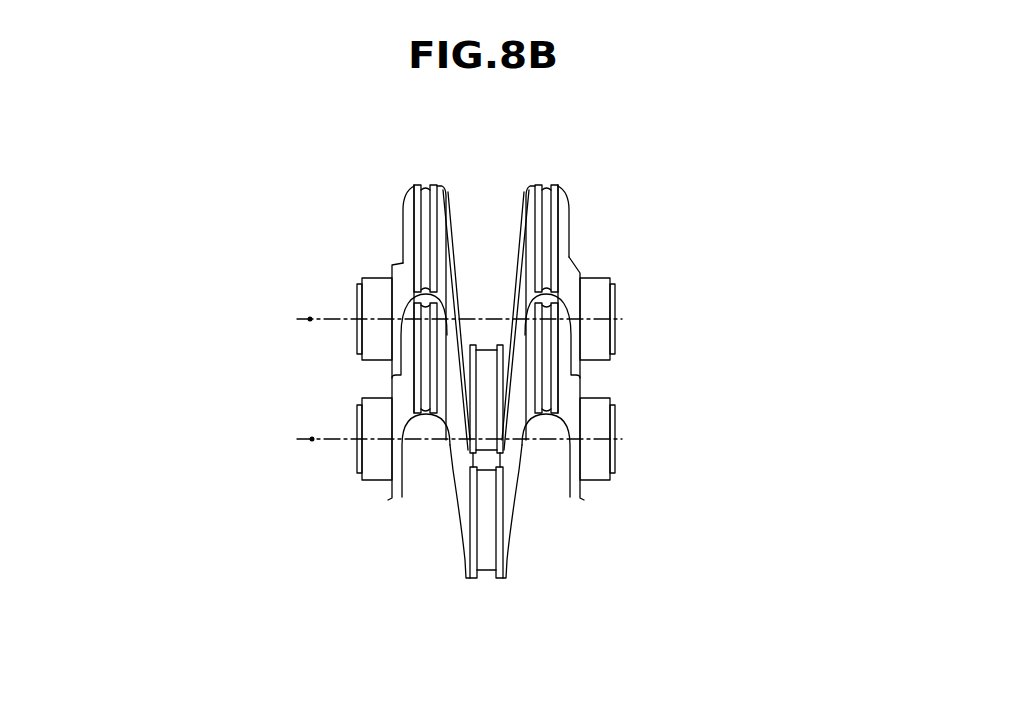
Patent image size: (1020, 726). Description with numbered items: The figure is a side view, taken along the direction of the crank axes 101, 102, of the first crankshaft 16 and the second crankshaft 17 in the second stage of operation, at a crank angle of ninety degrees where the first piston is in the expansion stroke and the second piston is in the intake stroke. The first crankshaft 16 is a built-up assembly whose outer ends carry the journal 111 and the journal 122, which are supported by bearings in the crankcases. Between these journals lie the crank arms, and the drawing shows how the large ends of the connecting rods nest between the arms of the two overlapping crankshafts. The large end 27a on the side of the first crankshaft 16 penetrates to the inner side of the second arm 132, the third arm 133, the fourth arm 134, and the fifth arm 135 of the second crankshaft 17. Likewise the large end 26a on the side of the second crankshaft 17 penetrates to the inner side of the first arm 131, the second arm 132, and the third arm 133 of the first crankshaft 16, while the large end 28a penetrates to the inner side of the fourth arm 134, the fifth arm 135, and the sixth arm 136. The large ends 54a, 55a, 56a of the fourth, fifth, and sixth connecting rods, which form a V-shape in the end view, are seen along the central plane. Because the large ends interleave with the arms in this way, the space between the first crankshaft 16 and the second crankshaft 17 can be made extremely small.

The first crankshaft 16 is at (402, 230).
The second crankshaft 17 is at (462, 547).
The large end 26a is at (455, 427).
The large end 27a is at (487, 350).
The large end 28a is at (547, 445).
The large end of fourth connecting rod 54a is at (426, 188).
The large end of fifth connecting rod 55a is at (487, 558).
The large end of sixth connecting rod 56a is at (545, 188).
The crank axis 101 is at (310, 319).
The crank axis 102 is at (312, 439).
The journal 111 is at (357, 298).
The journal 122 is at (617, 298).
The first arm 131 is at (398, 262).
The second arm 132 is at (453, 197).
The third arm 133 is at (458, 267).
The fourth arm 134 is at (513, 300).
The fifth arm 135 is at (516, 200).
The sixth arm 136 is at (572, 262).